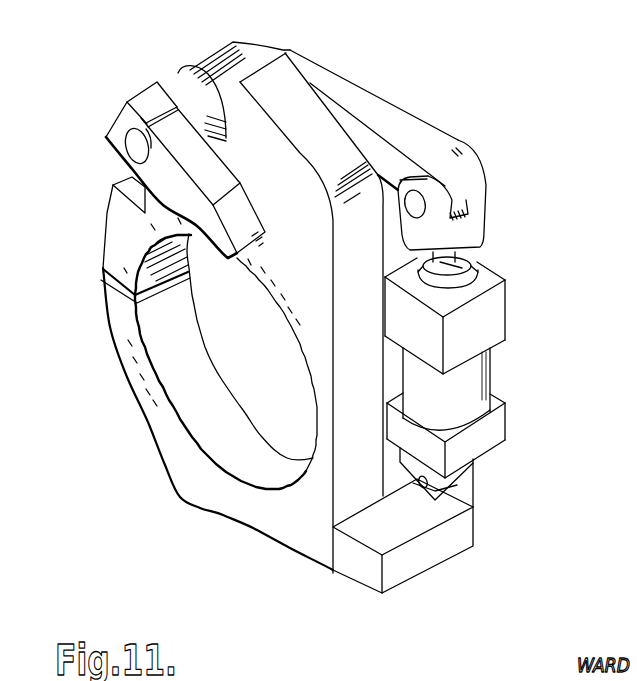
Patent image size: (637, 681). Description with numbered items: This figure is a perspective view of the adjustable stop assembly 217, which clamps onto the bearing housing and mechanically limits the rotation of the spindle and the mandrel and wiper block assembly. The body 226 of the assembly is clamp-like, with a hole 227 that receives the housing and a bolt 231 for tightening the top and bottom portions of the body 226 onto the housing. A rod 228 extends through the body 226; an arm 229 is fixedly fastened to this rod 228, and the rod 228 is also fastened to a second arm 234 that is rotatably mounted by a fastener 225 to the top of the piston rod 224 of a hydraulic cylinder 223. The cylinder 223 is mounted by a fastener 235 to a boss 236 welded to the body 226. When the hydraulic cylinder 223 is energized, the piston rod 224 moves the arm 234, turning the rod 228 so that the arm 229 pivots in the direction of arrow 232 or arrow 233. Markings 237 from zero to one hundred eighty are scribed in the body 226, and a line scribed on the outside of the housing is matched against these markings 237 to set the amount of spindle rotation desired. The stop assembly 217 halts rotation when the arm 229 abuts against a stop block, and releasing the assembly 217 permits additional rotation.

The adjustable stop assembly 217 is at (116, 494).
The hydraulic cylinder 223 is at (483, 388).
The piston rod 224 is at (463, 261).
The fastener 225 is at (415, 202).
The body 226 is at (297, 543).
The hole 227 is at (258, 414).
The rod 228 is at (137, 147).
The arm 229 is at (182, 128).
The bolt 231 is at (133, 187).
The arrow 232 is at (288, 158).
The arrow 233 is at (292, 183).
The arm 234 is at (376, 113).
The fastener 235 is at (427, 497).
The boss 236 is at (397, 575).
The markings 237 is at (135, 243).